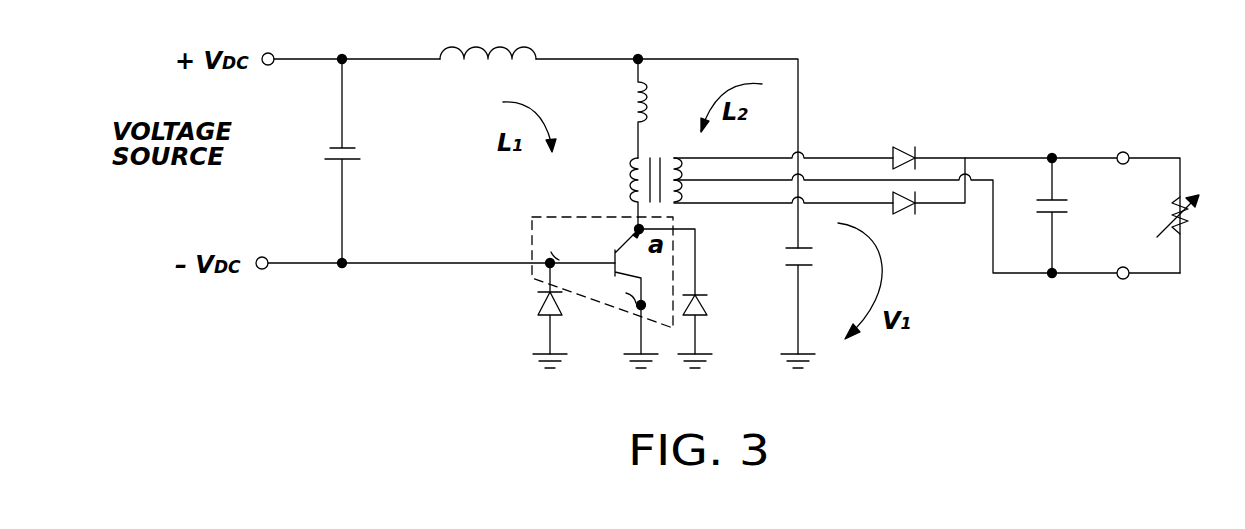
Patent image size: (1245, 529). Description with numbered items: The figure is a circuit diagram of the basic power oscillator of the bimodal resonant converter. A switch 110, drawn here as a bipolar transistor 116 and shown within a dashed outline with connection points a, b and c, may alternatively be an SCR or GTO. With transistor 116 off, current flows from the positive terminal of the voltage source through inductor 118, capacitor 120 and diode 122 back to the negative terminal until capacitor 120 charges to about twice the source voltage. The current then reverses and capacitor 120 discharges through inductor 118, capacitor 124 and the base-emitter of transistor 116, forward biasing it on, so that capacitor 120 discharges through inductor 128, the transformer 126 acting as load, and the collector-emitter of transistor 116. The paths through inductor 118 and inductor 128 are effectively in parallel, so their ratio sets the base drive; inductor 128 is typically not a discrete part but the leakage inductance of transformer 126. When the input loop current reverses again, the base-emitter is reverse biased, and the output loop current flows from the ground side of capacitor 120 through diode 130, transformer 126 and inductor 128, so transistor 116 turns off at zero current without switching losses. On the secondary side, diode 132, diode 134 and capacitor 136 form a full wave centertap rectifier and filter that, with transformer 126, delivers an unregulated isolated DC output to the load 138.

The switch 110 is at (545, 205).
The transistor 116 is at (612, 252).
The inductor 118 is at (533, 46).
The capacitor 120 is at (790, 250).
The diode 122 is at (559, 300).
The capacitor 124 is at (348, 150).
The transformer 126 is at (634, 160).
The second inductor 128 is at (634, 84).
The diode 130 is at (706, 306).
The diode 132 is at (893, 150).
The diode 134 is at (890, 202).
The capacitor 136 is at (1048, 200).
The load 138 is at (1168, 207).